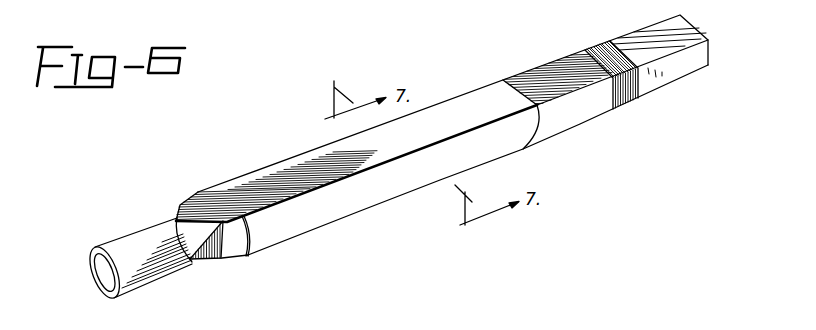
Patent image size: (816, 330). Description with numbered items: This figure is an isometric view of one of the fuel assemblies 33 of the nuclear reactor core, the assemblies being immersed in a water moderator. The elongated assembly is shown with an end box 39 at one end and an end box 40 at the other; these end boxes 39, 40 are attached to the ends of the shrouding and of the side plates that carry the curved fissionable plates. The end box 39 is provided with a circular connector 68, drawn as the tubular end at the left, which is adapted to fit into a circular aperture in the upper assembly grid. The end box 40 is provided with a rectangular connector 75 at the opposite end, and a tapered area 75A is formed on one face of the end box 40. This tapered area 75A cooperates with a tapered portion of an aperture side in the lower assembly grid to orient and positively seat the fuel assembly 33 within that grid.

The fuel assembly 33 is at (346, 223).
The end box 39 is at (188, 203).
The end box 40 is at (538, 49).
The circular connector 68 is at (118, 250).
The rectangular connector 75 is at (615, 45).
The tapered area 75A is at (628, 93).